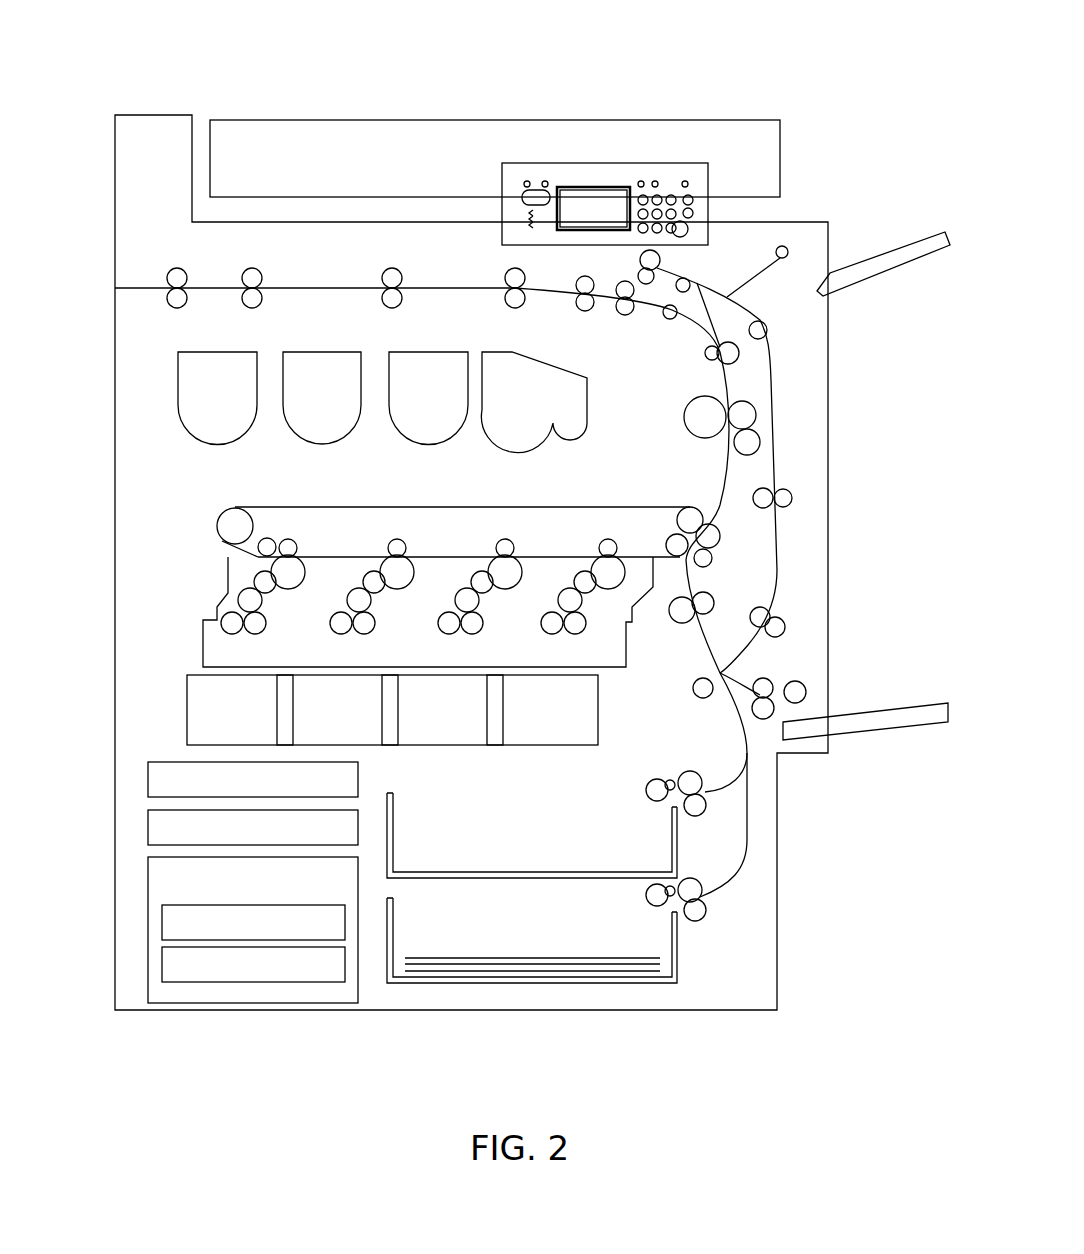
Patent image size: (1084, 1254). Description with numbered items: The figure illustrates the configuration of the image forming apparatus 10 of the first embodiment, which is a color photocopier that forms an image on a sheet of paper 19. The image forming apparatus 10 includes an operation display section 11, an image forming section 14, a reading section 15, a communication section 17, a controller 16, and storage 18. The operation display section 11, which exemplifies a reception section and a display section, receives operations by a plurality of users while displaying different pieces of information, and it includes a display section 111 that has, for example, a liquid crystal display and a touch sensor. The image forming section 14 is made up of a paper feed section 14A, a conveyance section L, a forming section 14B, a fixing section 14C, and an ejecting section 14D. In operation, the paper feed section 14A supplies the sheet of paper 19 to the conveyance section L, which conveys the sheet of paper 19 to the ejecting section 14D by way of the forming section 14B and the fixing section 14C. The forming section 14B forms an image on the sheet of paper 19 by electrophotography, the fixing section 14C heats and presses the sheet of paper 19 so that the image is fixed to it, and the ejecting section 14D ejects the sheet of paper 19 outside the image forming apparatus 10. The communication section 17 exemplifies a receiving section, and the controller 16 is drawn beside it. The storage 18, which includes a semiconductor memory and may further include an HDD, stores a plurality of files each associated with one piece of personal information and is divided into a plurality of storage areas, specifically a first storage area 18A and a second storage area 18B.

The image forming apparatus 10 is at (790, 88).
The reading section 15 is at (380, 119).
The operation display section 11 is at (656, 162).
The display section 111 is at (586, 186).
The image forming section 14 is at (168, 548).
The ejecting section 14D is at (170, 262).
The fixing section 14C is at (694, 392).
The forming section 14B is at (168, 605).
The paper feed section 14A is at (385, 990).
The sheet of paper 19 is at (507, 974).
The conveyance section L is at (762, 780).
The communication section 17 is at (147, 780).
The controller 16 is at (147, 828).
The storage 18 is at (147, 878).
The first storage area 18A is at (161, 922).
The second storage area 18B is at (161, 965).